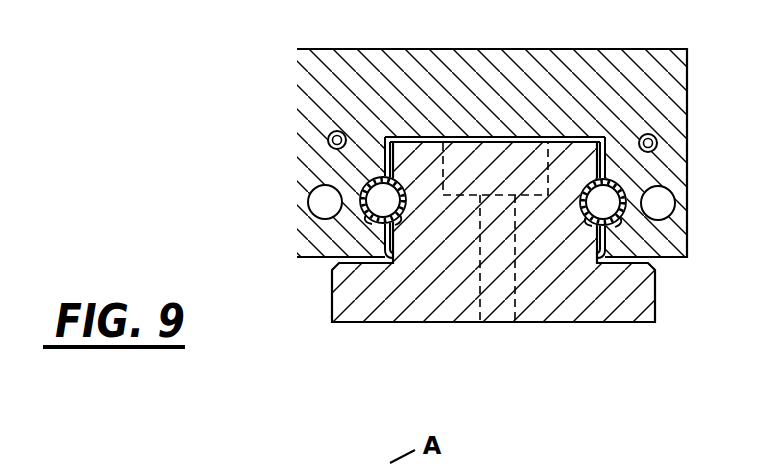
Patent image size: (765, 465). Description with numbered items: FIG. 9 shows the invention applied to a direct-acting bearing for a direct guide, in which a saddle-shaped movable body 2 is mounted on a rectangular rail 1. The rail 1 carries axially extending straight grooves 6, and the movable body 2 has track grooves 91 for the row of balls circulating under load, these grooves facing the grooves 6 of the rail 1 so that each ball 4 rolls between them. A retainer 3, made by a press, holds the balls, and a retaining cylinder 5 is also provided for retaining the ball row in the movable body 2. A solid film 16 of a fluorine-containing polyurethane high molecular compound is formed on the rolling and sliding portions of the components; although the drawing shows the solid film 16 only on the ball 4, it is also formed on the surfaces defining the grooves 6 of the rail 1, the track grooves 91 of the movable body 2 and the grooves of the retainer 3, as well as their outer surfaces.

The rail 1 is at (567, 312).
The movable body 2 is at (506, 60).
The retainer 3 is at (439, 180).
The ball 4 is at (366, 216).
The retaining cylinder 5 is at (317, 200).
The straight grooves 6 is at (376, 243).
The solid film 16 is at (400, 222).
The track grooves 91 is at (365, 185).